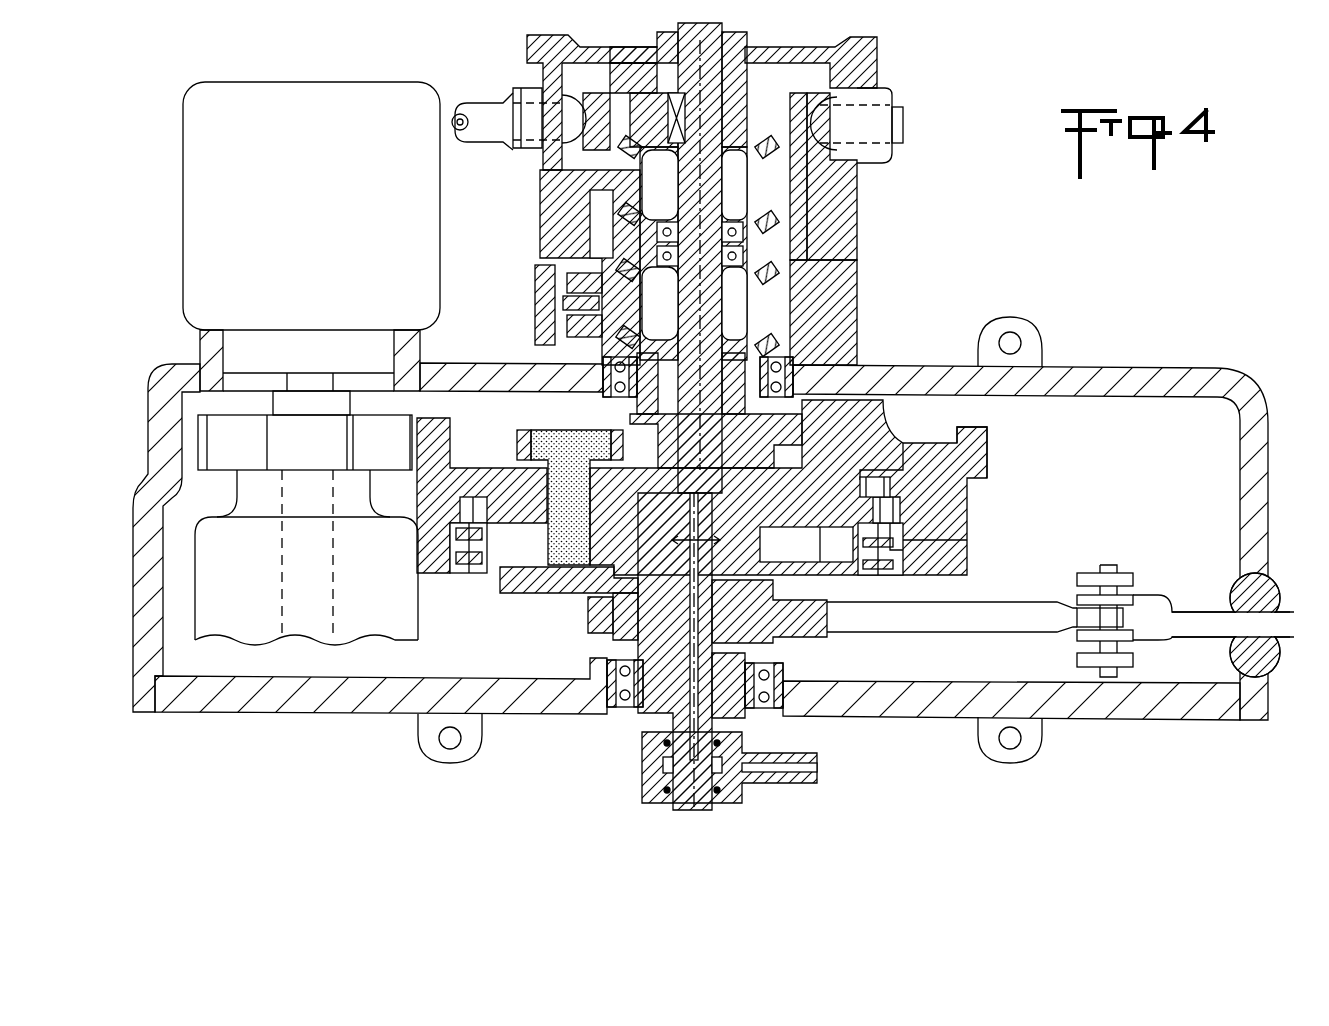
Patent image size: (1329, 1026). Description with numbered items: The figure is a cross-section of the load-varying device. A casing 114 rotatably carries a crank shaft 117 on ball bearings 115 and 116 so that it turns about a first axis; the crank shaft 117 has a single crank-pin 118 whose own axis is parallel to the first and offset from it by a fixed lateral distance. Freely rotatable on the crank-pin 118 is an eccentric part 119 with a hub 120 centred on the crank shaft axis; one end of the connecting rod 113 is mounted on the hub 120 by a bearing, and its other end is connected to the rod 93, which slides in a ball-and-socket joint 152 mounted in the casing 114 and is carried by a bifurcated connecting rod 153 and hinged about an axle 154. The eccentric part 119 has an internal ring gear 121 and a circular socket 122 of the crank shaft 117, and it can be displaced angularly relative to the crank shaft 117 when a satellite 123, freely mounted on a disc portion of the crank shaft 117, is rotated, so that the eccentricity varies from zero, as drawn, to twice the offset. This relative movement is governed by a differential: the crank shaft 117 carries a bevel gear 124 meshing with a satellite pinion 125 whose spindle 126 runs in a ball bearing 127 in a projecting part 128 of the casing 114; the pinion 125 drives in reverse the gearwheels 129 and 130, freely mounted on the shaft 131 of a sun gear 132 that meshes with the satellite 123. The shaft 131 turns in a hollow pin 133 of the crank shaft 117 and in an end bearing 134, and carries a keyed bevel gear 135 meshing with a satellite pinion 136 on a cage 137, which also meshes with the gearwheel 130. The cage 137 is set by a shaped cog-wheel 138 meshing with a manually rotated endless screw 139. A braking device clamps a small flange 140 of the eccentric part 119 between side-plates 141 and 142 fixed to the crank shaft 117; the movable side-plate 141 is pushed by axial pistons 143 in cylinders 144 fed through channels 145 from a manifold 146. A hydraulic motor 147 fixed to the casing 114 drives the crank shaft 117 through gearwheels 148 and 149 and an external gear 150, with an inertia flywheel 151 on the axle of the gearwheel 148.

The rod 93 is at (1162, 638).
The connecting rod 113 is at (992, 606).
The casing 114 is at (1122, 705).
The ball bearing 115 is at (780, 674).
The ball bearing 116 is at (612, 398).
The crank shaft 117 is at (958, 510).
The crank-pin 118 is at (632, 508).
The eccentric part 119 is at (540, 594).
The hub 120 is at (770, 632).
The internal ring gear 121 is at (818, 551).
The circular socket 122 is at (900, 562).
The satellite 123 is at (548, 440).
The bevel gear 124 is at (762, 352).
The satellite pinion 125 is at (575, 328).
The spindle 126 is at (575, 304).
The ball bearing 127 is at (550, 275).
The projecting part 128 is at (835, 282).
The gearwheel 129 is at (745, 275).
The gearwheel 130 is at (758, 222).
The shaft 131 is at (706, 326).
The sun gear 132 is at (786, 455).
The hollow pin 133 is at (770, 365).
The end bearing 134 is at (840, 78).
The bevel gear 135 is at (760, 143).
The satellite pinion 136 is at (600, 188).
The cage 137 is at (825, 188).
The shaped cog-wheel 138 is at (855, 103).
The endless screw 139 is at (903, 125).
The small flange 140 is at (888, 576).
The movable side-plate 141 is at (448, 512).
The side-plate 142 is at (462, 572).
The axial piston 143 is at (895, 500).
The cylinder 144 is at (887, 477).
The channel 145 is at (702, 545).
The manifold 146 is at (745, 750).
The hydraulic motor 147 is at (325, 208).
The gearwheel 148 is at (265, 450).
The gearwheel 149 is at (390, 425).
The external gear 150 is at (990, 453).
The inertia flywheel 151 is at (248, 589).
The ball-and-socket joint 152 is at (1240, 596).
The bifurcated connecting rod 153 is at (1133, 579).
The axle 154 is at (1105, 565).